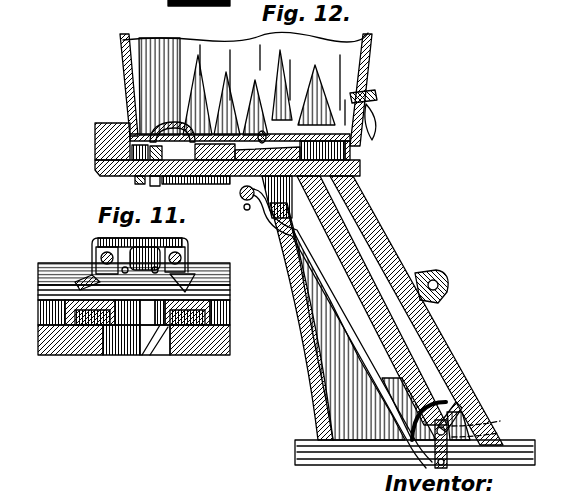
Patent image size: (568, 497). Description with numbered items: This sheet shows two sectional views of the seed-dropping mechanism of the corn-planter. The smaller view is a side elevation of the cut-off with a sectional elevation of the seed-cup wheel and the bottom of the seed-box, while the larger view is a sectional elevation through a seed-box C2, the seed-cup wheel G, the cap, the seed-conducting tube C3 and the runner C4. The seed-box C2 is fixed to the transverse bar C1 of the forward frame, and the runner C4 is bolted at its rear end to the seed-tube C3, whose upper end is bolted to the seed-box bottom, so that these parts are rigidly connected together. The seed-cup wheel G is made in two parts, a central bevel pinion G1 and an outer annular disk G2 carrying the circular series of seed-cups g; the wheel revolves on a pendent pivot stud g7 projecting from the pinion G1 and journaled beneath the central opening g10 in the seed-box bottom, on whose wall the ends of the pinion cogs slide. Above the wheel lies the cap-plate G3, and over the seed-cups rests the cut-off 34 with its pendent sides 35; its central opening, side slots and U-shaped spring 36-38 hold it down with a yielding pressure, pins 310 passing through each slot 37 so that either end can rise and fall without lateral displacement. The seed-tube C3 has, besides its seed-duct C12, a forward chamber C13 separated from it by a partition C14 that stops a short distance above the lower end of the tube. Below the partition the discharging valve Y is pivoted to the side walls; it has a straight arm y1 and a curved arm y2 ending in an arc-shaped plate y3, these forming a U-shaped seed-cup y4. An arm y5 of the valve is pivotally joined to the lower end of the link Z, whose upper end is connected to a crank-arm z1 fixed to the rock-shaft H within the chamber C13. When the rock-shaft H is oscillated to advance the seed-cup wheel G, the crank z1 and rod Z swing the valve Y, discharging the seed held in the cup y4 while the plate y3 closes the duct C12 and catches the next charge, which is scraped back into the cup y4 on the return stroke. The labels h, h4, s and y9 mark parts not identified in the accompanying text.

In FIG. 12, the conveyor arm h is at (76, 10).
In FIG. 12, the conveyor bracket h4 is at (356, 189).
In FIG. 11, the conveyor bracket h4 is at (138, 350).
In FIG. 12, the transverse bar C1 is at (95, 135).
In FIG. 12, the seed-box C2 is at (260, 89).
In FIG. 12, the pendent pivot stud g7 is at (258, 135).
In FIG. 12, the central part of seed-cup wheel (bevel pinion) G1 is at (262, 141).
In FIG. 12, the seed-cup wheel G is at (310, 141).
In FIG. 11, the seed-cup wheel G is at (80, 312).
In FIG. 12, the seed-cup g is at (355, 165).
In FIG. 11, the seed-cup g is at (213, 308).
In FIG. 12, the central opening in seed-box bottom g10 is at (182, 189).
In FIG. 11, the central opening in seed-box bottom g10 is at (55, 369).
In FIG. 12, the rock-shaft H is at (255, 193).
In FIG. 12, the link pin y9 is at (336, 191).
In FIG. 12, the crank-arm z1 is at (228, 216).
In FIG. 12, the partition C14 is at (367, 250).
In FIG. 12, the seed-conducting tube C3 is at (395, 260).
In FIG. 12, the link or connecting rod Z is at (322, 297).
In FIG. 12, the seed-duct C12 is at (372, 331).
In FIG. 12, the chamber C13 is at (333, 367).
In FIG. 12, the runner C4 is at (312, 443).
In FIG. 12, the arc-shaped arm y3 is at (412, 410).
In FIG. 12, the curved arm y2 is at (438, 405).
In FIG. 12, the U-shaped pocket or seed-cup y4 is at (460, 404).
In FIG. 12, the straight arm y1 is at (470, 428).
In FIG. 12, the discharging valve Y is at (476, 442).
In FIG. 12, the arm of the valve y5 is at (405, 463).
In FIG. 11, the cap-plate G3 is at (45, 275).
In FIG. 11, the seal strip s is at (62, 288).
In FIG. 11, the outer annular disk part of seed-cup wheel G2 is at (65, 322).
In FIG. 11, the central opening, slots and U-shaped spring of cut-off 36-38 is at (160, 236).
In FIG. 11, the slot 37 is at (100, 250).
In FIG. 11, the pins 310 is at (208, 257).
In FIG. 11, the cut-off 34 is at (100, 265).
In FIG. 11, the pendent sides 35 is at (196, 274).